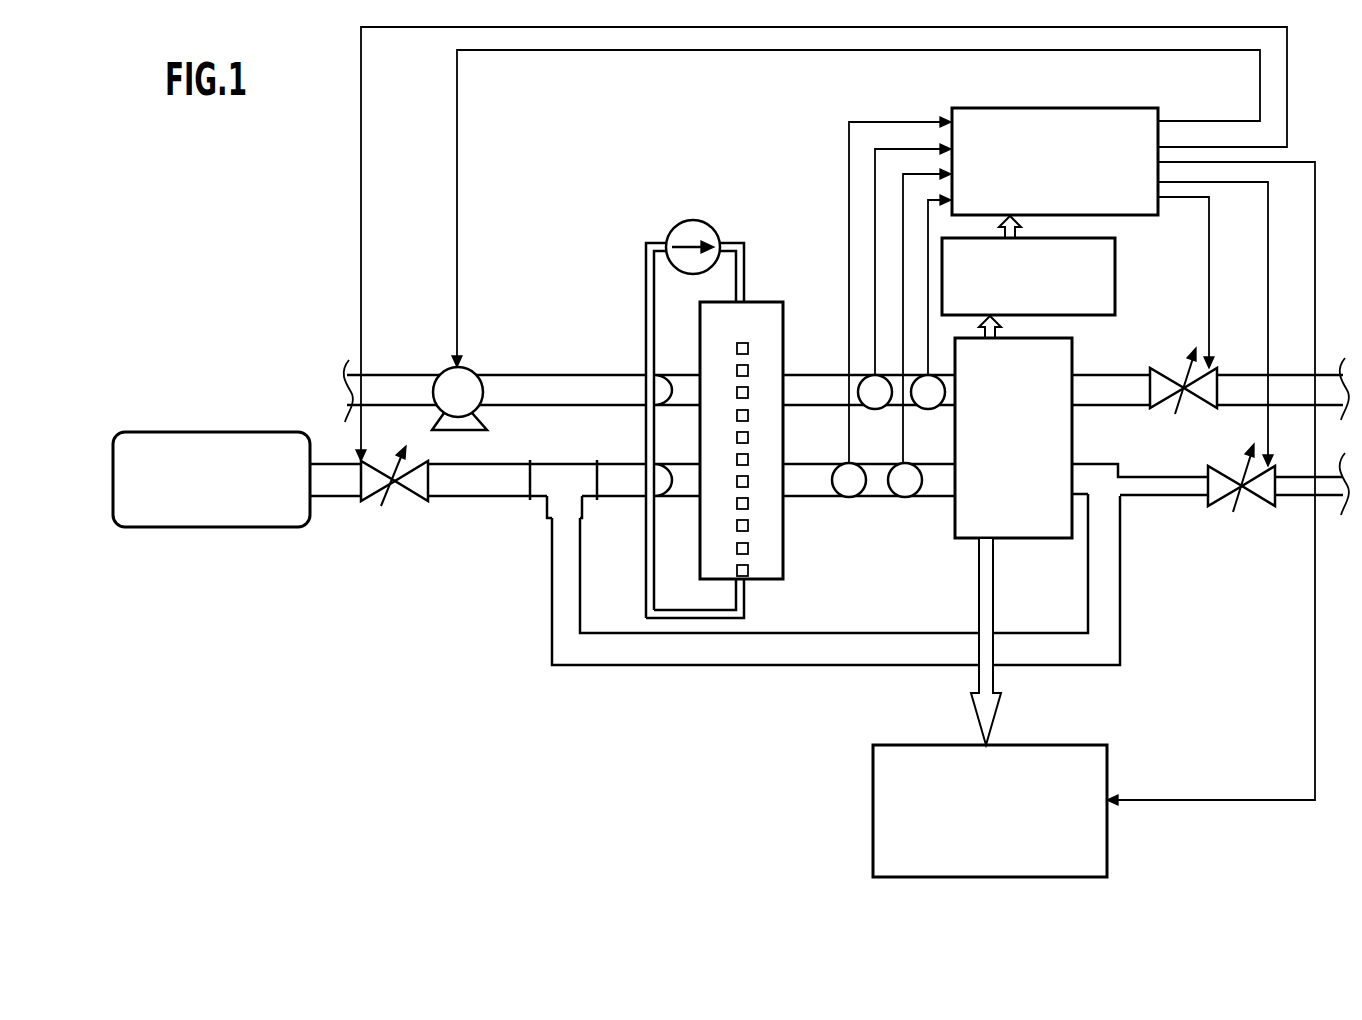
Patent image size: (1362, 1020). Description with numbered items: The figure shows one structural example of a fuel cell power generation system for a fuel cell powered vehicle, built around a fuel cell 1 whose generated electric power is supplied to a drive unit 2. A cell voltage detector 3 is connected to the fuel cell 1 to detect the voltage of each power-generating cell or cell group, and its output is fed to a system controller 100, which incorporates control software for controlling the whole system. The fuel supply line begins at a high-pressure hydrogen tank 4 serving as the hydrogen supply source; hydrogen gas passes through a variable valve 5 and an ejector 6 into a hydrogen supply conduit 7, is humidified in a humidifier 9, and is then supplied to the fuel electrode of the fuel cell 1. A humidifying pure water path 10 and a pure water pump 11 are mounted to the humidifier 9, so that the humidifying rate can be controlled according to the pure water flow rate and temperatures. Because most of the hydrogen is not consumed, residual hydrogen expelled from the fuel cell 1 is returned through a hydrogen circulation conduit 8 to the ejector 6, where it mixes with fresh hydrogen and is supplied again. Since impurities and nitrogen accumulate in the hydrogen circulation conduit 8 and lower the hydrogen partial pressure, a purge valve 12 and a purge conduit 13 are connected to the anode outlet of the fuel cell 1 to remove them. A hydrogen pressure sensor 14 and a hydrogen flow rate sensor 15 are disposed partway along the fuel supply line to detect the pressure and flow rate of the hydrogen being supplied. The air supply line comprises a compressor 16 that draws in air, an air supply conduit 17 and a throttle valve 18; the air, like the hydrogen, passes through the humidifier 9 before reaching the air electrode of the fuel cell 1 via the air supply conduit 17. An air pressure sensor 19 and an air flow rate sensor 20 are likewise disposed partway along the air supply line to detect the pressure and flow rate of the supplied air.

The fuel cell 1 is at (1036, 540).
The drive unit 2 is at (873, 814).
The cell voltage detector 3 is at (1116, 272).
The high-pressure hydrogen tank 4 is at (243, 529).
The variable valve 5 is at (384, 500).
The ejector 6 is at (557, 462).
The hydrogen supply conduit 7 is at (612, 498).
The hydrogen circulation conduit 8 is at (680, 667).
The humidifier 9 is at (762, 301).
The humidifying pure water path 10 is at (646, 290).
The pure water pump 11 is at (692, 220).
The purge valve 12 is at (1214, 502).
The purge conduit 13 is at (1340, 497).
The hydrogen pressure sensor 14 is at (906, 497).
The hydrogen flow rate sensor 15 is at (850, 497).
The compressor 16 is at (470, 365).
The air supply conduit 17 is at (393, 372).
The throttle valve 18 is at (1160, 405).
The air pressure sensor 19 is at (929, 409).
The air flow rate sensor 20 is at (876, 409).
The system controller 100 is at (1112, 108).